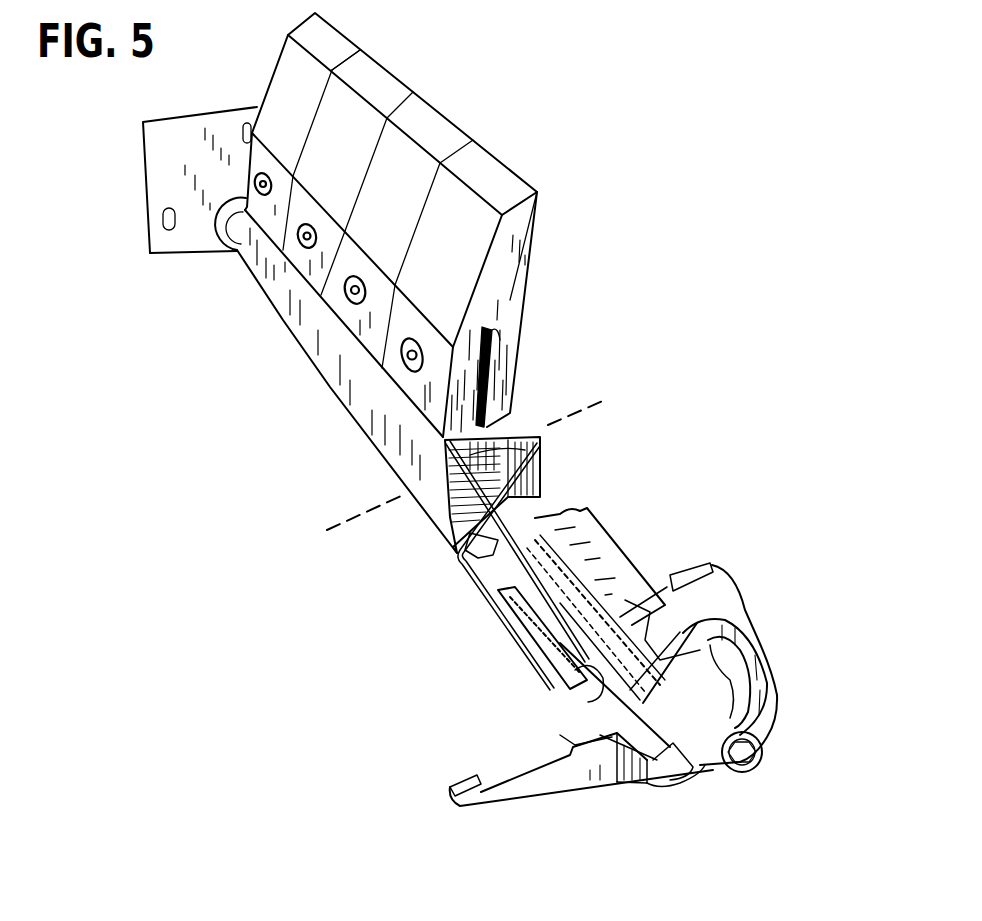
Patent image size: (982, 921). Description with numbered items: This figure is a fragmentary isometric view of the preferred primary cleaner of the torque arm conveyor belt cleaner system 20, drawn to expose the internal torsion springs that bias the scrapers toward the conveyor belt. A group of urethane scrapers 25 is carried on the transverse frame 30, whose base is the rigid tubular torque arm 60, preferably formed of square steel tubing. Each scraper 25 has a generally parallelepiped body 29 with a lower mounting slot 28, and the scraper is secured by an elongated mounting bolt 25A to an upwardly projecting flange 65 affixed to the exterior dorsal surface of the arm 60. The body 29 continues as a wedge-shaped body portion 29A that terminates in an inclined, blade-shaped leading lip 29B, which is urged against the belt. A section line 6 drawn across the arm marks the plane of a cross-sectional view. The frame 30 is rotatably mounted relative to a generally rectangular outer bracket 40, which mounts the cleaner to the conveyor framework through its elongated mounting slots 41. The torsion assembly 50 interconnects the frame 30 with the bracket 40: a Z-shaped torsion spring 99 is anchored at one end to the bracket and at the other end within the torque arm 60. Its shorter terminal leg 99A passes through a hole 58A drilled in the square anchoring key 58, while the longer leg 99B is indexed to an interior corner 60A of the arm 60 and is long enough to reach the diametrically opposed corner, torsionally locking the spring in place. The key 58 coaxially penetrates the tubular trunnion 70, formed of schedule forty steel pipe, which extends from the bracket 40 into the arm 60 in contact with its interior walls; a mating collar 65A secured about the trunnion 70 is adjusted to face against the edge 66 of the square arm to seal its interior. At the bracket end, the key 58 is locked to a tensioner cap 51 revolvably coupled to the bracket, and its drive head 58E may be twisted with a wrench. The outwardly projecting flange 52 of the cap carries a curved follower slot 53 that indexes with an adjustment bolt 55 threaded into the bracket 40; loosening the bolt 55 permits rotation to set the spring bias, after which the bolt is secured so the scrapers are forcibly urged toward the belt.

The torque arm conveyor belt cleaner system 20 is at (568, 97).
The scraper 25 is at (510, 192).
The mounting bolt 25A is at (348, 325).
The lower mounting slot 28 is at (485, 330).
The parallelepiped body 29 is at (525, 357).
The wedge-shaped body portion 29A is at (370, 128).
The leading blade-shaped lip 29B is at (443, 105).
The frame 30 is at (268, 340).
The outer bracket 40 is at (585, 778).
The mounting slot 41 is at (700, 568).
The torsion assembly 50 is at (515, 678).
The tensioner cap 51 is at (648, 772).
The flange 52 is at (728, 622).
The follower slot 53 is at (755, 692).
The adjustment bolt 55 is at (757, 752).
The anchoring key 58 is at (615, 785).
The hole 58A is at (575, 720).
The key drive head 58E is at (690, 775).
The torque arm 60 is at (343, 420).
The interior corner 60A is at (540, 440).
The upwardly projecting flange 65 is at (490, 340).
The mating collar 65A is at (232, 253).
The edge 66 is at (625, 592).
The trunnion 70 is at (650, 602).
The torsion spring 99 is at (500, 580).
The terminal spring leg 99A is at (565, 690).
The longer spring leg 99B is at (537, 457).
The section line 6- 6 is at (366, 510).